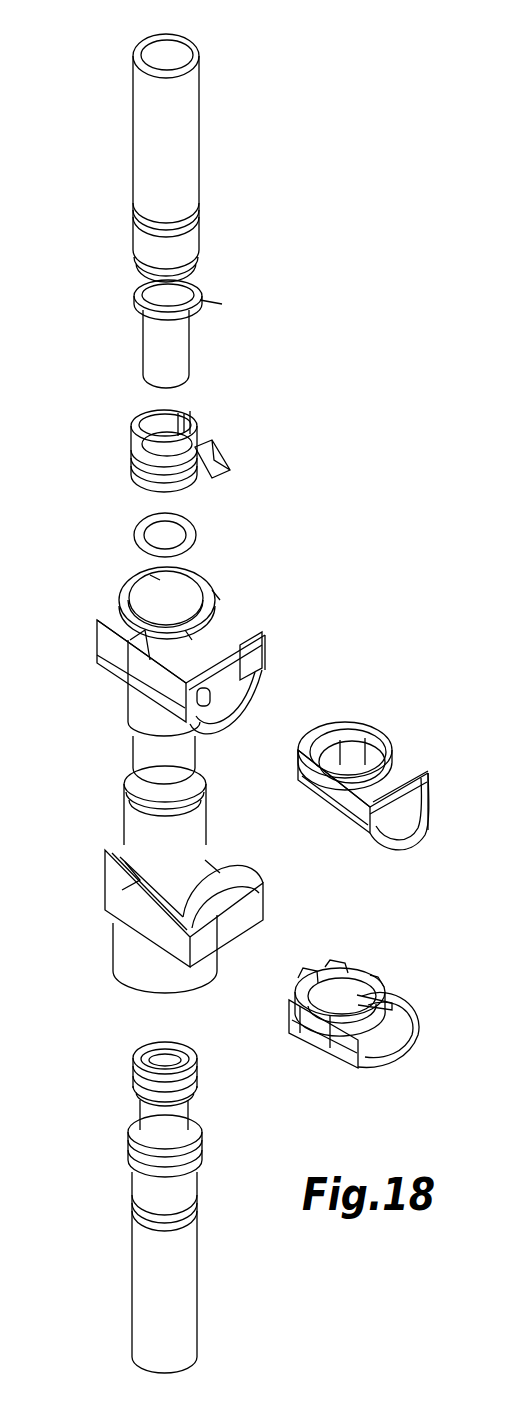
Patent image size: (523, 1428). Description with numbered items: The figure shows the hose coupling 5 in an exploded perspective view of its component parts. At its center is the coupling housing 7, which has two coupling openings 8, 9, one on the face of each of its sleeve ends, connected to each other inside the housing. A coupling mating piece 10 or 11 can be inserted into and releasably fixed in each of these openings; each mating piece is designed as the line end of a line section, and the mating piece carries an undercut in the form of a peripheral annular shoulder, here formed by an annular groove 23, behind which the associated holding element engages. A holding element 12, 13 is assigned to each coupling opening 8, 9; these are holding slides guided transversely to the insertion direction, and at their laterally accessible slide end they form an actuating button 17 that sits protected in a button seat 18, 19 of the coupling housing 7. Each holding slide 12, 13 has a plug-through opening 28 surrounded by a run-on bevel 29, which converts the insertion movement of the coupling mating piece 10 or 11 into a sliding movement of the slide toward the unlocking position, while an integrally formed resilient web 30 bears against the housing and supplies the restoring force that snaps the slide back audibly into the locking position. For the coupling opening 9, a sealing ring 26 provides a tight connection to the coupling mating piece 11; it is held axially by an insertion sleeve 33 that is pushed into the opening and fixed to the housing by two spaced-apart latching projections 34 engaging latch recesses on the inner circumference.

The hose coupling 5 is at (355, 576).
The coupling housing 7 is at (132, 760).
The coupling opening 8 is at (142, 1002).
The coupling opening 9 is at (190, 578).
The coupling mating piece 10 is at (200, 1112).
The coupling mating piece 11 is at (180, 347).
The holding element 12 is at (403, 973).
The holding element 13 is at (421, 750).
The actuating button 17 is at (405, 825).
The button seat 18 is at (190, 910).
The button seat 19 is at (247, 634).
The annular groove 23 is at (146, 1111).
The sealing ring 26 is at (140, 542).
The plug-through opening 28 is at (347, 750).
The run-on bevel 29 is at (347, 763).
The resilient web 30 is at (335, 1033).
The insertion sleeve 33 is at (147, 477).
The latching projections 34 is at (200, 460).